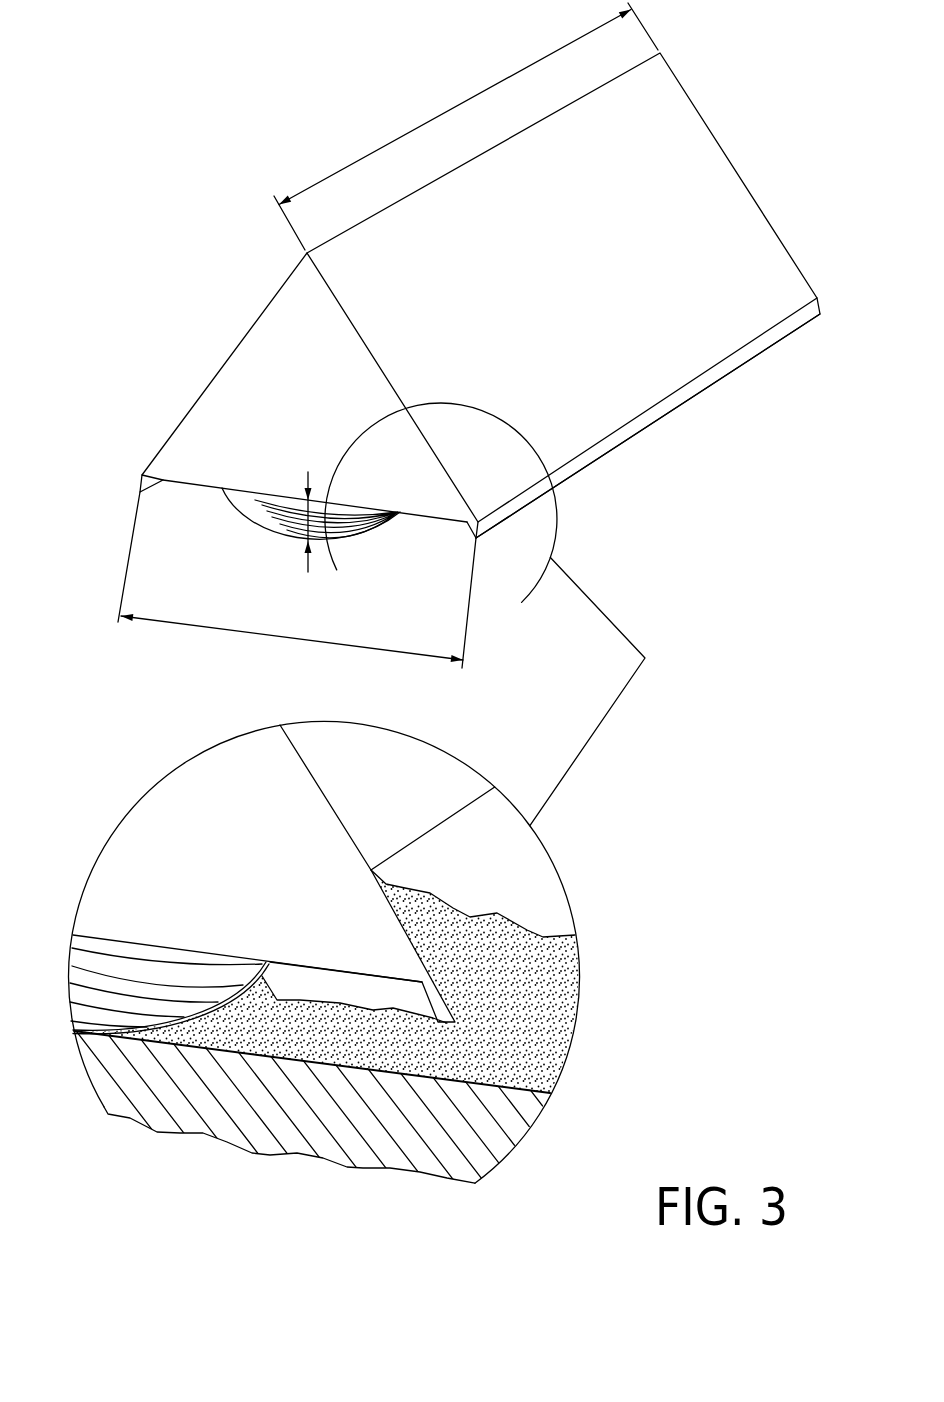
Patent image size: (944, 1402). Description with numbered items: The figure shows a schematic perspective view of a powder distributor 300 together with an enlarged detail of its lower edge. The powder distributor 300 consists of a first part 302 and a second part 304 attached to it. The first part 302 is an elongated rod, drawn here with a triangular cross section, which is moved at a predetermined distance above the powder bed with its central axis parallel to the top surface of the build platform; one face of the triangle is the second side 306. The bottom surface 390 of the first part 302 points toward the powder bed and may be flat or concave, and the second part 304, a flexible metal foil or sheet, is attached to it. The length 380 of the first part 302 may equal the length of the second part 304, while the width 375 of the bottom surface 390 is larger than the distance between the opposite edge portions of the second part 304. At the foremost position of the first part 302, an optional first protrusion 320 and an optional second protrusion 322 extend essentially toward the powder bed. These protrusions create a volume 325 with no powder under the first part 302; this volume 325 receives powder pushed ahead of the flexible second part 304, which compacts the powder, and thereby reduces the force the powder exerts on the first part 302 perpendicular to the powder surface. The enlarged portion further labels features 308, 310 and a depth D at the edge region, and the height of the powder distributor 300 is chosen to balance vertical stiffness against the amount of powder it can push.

The powder distributor 300 is at (436, 626).
The first part 302 is at (637, 290).
The second part 304 is at (240, 522).
The second side 306 is at (428, 938).
The blade lower edge 308 is at (365, 985).
The intermediate layer 310 is at (467, 1055).
The first protrusion 320 is at (631, 440).
The second protrusion 322 is at (138, 491).
The volume 325 is at (328, 987).
The width 375 is at (271, 636).
The length 380 is at (434, 112).
The bottom surface 390 is at (250, 488).
The recess depth D is at (306, 520).